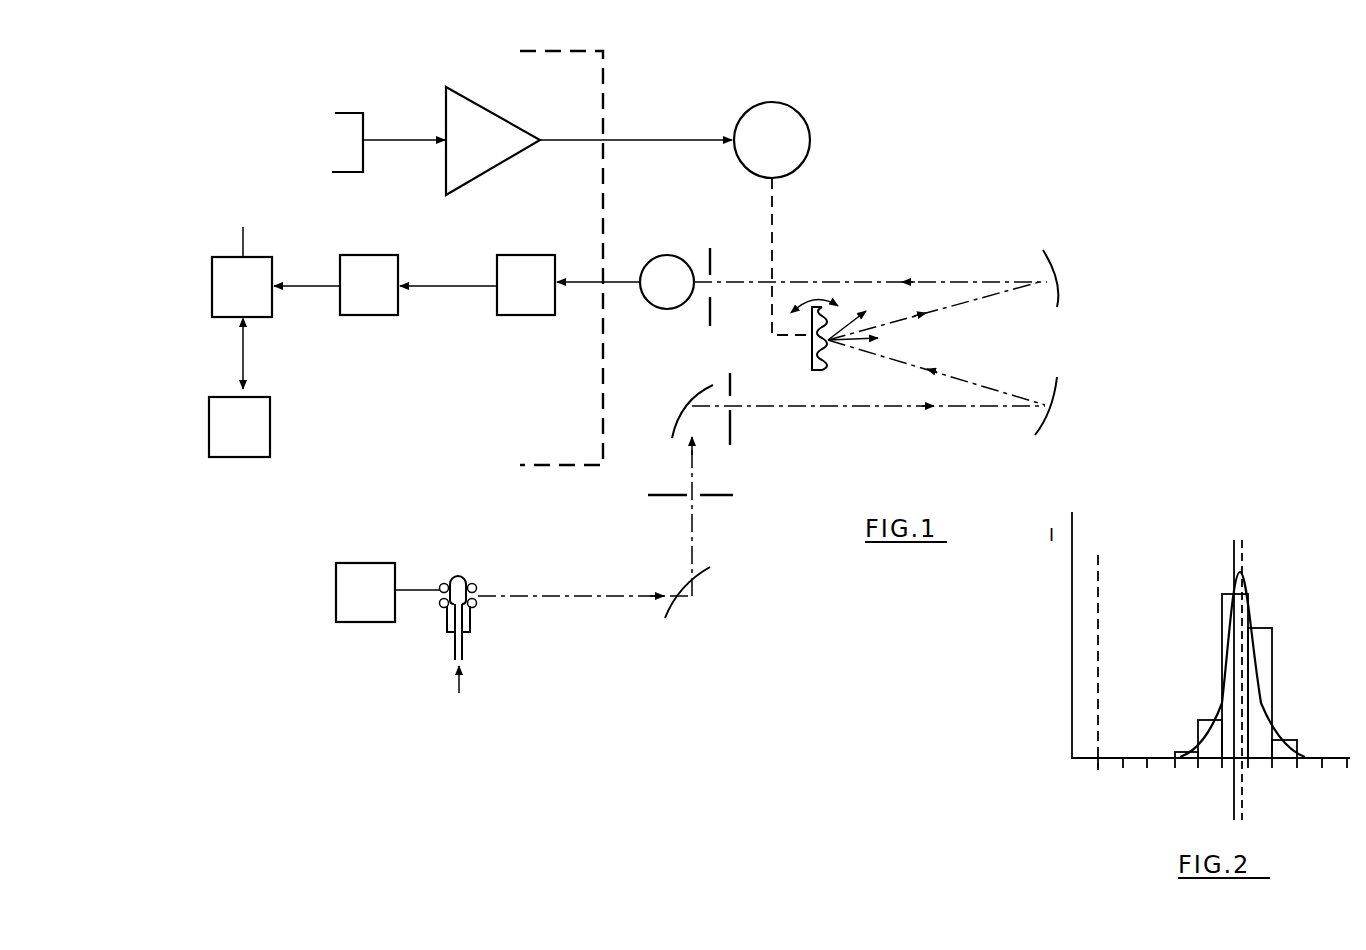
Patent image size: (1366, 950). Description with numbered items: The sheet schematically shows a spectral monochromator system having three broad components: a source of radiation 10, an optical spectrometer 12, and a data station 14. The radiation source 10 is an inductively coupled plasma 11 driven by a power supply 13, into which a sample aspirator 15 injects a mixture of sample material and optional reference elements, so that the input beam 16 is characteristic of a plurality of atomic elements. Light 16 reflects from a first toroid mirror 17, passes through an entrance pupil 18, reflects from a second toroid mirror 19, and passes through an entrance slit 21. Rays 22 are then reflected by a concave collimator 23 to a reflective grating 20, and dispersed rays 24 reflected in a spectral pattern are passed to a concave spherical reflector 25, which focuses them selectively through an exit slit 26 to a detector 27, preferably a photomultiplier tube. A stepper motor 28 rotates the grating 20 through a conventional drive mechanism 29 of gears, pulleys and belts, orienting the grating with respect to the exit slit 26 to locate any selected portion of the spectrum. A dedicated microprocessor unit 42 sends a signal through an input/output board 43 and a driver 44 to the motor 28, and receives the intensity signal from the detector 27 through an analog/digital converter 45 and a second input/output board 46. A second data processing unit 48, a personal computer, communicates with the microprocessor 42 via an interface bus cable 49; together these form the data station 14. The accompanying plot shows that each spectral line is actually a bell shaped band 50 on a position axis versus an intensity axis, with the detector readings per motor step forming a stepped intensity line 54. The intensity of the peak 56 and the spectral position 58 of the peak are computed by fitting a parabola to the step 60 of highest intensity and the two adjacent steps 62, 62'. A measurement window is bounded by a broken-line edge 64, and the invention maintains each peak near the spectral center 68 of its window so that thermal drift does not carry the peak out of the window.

In FIG. 1, the source of radiation 10 is at (422, 534).
In FIG. 1, the inductively coupled plasma 11 is at (473, 616).
In FIG. 1, the optical spectrometer 12 is at (940, 119).
In FIG. 1, the power supply 13 is at (336, 607).
In FIG. 1, the data station 14 is at (608, 68).
In FIG. 1, the sample aspirator 15 is at (467, 648).
In FIG. 1, the input beam 16 is at (598, 596).
In FIG. 1, the first toroid mirror 17 is at (705, 585).
In FIG. 1, the entrance pupil 18 is at (733, 495).
In FIG. 1, the second toroid mirror 19 is at (684, 412).
In FIG. 1, the reflective grating 20 is at (830, 366).
In FIG. 1, the entrance slit 21 is at (738, 395).
In FIG. 1, the rays 22 is at (845, 412).
In FIG. 1, the concave collimator 23 is at (1060, 395).
In FIG. 1, the dispersed rays 24 is at (998, 297).
In FIG. 1, the concave spherical reflector 25 is at (1062, 262).
In FIG. 1, the exit slit 26 is at (722, 222).
In FIG. 1, the detector 27 is at (657, 255).
In FIG. 1, the stepper motor 28 is at (805, 122).
In FIG. 1, the drive mechanism 29 is at (774, 232).
In FIG. 1, the microprocessor unit 42 is at (212, 272).
In FIG. 1, the input/output board 43 is at (352, 113).
In FIG. 1, the driver 44 is at (500, 115).
In FIG. 1, the analog/digital converter 45 is at (540, 255).
In FIG. 1, the second input/output board 46 is at (390, 255).
In FIG. 1, the second data processing unit 48 is at (209, 417).
In FIG. 1, the IEEE-488 cable 49 is at (245, 360).
In FIG. 2, the bell shaped band 50 is at (1245, 652).
In FIG. 2, the stepped intensity line 54 is at (1238, 652).
In FIG. 2, the peak 56 is at (1250, 580).
In FIG. 2, the spectral position of the peak 58 is at (1244, 805).
In FIG. 2, the step with highest intensity 60 is at (1222, 592).
In FIG. 2, the step on one side of the maximum 62 is at (1185, 719).
In FIG. 2, the step on the other side of the maximum 62' is at (1288, 683).
In FIG. 2, the window edge 64 is at (1098, 566).
In FIG. 2, the spectral center of the window 68 is at (1241, 552).